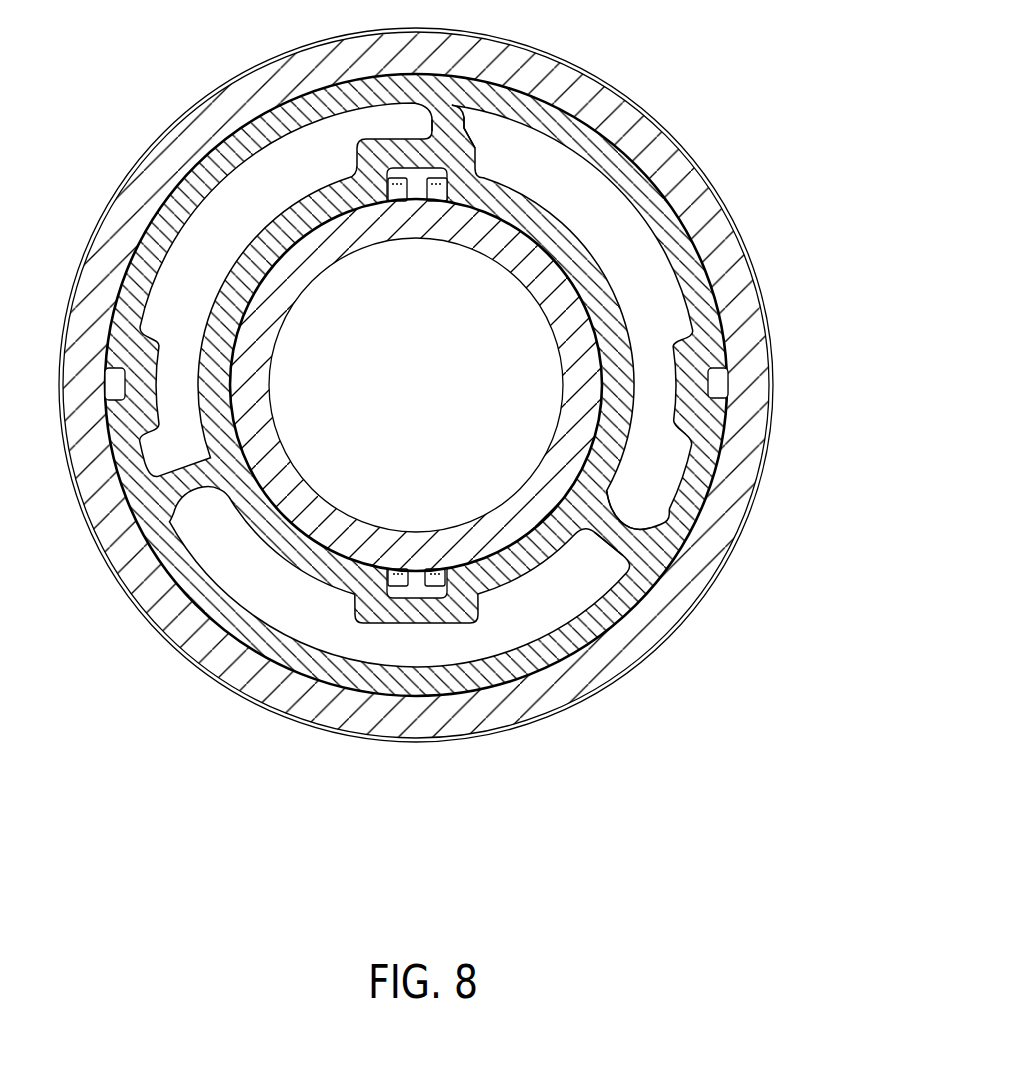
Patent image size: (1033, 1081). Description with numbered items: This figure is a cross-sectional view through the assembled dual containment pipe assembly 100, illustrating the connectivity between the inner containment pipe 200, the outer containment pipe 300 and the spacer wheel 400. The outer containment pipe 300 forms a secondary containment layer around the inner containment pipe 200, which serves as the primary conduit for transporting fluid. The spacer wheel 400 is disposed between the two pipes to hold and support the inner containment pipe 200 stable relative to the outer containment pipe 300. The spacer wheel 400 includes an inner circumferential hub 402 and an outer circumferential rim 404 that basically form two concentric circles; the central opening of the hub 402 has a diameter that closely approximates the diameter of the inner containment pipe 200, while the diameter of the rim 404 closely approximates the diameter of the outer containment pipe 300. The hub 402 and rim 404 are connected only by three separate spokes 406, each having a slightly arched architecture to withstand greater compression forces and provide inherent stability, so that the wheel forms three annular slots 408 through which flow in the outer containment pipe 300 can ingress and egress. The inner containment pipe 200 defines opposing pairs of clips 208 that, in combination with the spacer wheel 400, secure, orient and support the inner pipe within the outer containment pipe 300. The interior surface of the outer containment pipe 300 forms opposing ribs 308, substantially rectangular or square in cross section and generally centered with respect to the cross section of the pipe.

The dual containment pipe assembly 100 is at (414, 822).
The inner containment pipe 200 is at (568, 263).
The clips 208 is at (418, 592).
The outer containment pipe 300 is at (581, 701).
The inner rib 308 is at (718, 388).
The spacer wheel 400 is at (238, 650).
The inner circumferential hub 402 is at (325, 212).
The outer circumferential rim 404 is at (350, 680).
The spokes 406 is at (443, 123).
The annular slots 408 is at (206, 216).